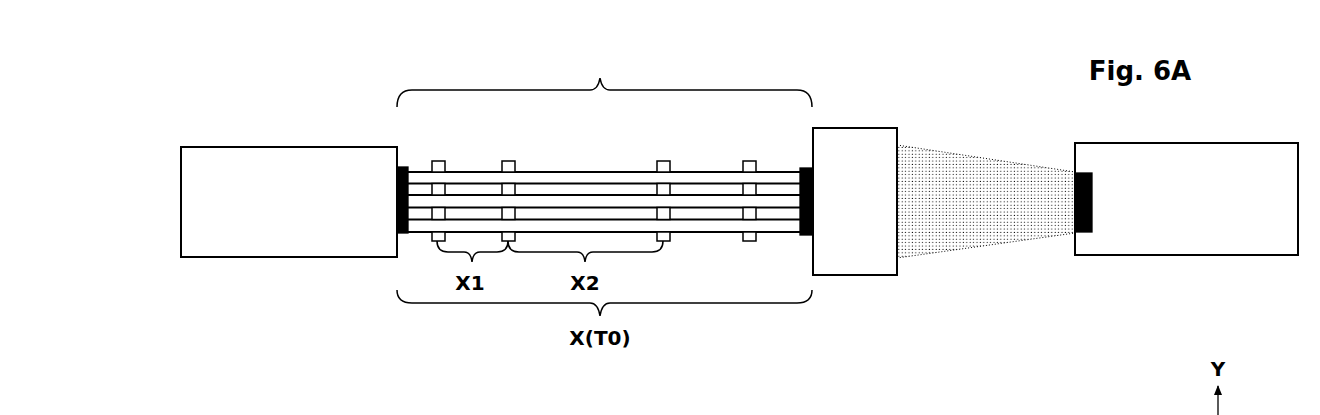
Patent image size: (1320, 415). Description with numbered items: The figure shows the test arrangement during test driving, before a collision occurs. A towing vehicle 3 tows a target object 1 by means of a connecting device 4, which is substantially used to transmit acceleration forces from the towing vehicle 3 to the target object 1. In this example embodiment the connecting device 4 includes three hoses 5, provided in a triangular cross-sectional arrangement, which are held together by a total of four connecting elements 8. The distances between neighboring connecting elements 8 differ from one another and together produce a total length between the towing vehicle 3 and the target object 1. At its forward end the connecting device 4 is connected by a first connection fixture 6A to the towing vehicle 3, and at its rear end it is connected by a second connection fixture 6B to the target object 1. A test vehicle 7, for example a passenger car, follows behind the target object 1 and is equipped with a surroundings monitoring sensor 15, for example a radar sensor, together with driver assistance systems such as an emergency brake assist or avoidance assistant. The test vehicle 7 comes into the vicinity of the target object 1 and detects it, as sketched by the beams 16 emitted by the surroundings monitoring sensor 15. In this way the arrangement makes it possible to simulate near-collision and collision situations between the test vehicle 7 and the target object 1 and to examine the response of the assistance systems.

The target object 1 is at (855, 201).
The towing vehicle 3 is at (289, 202).
The connecting device 4 is at (604, 81).
The deformable hose 5 is at (726, 166).
The first connection fixture 6A is at (403, 166).
The second connection fixture 6B is at (808, 166).
The test vehicle 7 is at (1186, 199).
The connecting element 8 is at (503, 159).
The surroundings monitoring sensor 15 is at (1087, 233).
The beams 16 is at (986, 201).